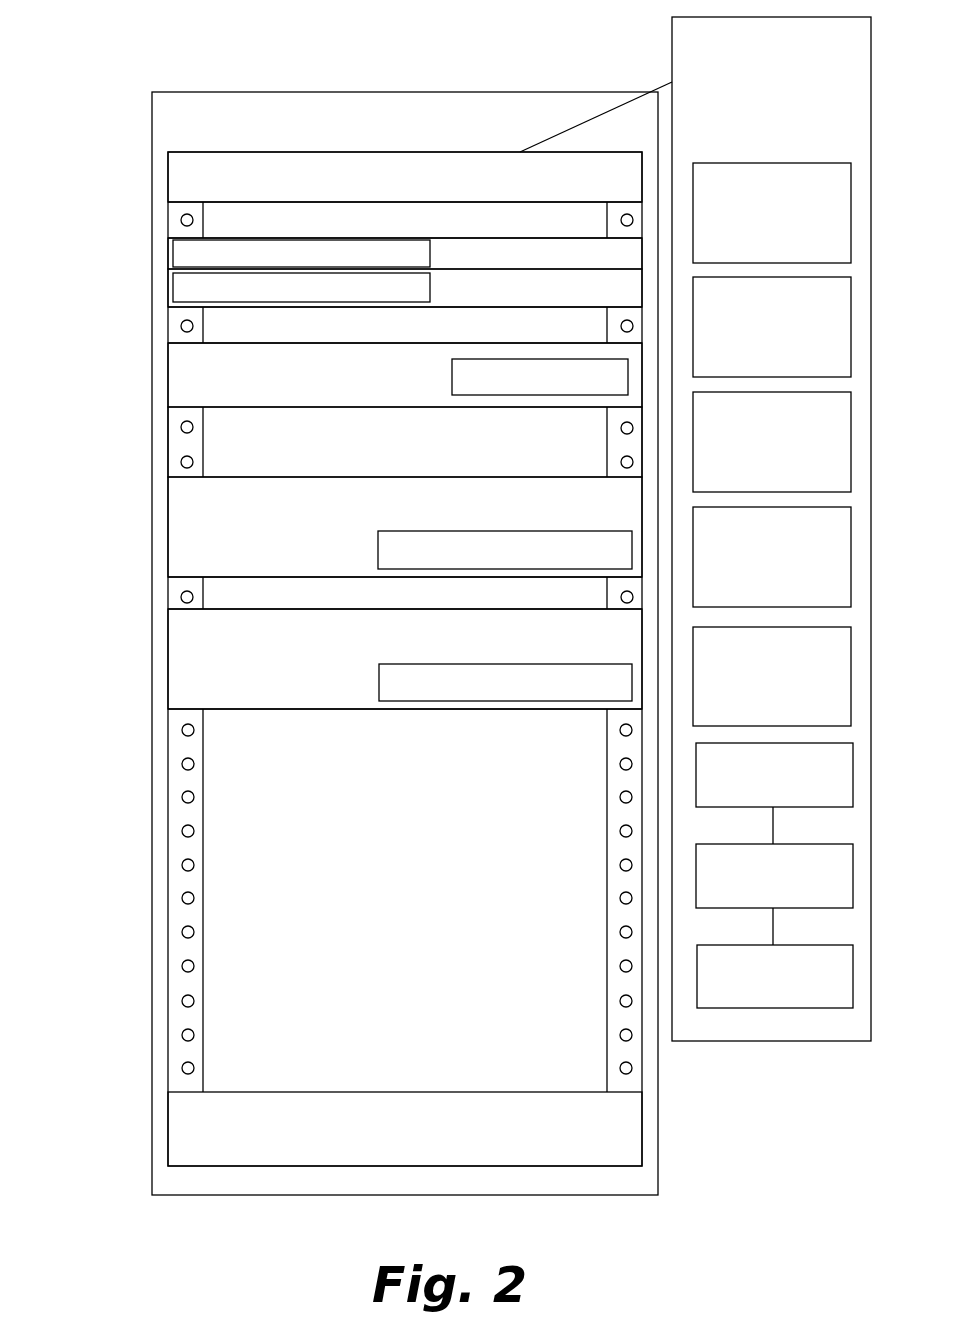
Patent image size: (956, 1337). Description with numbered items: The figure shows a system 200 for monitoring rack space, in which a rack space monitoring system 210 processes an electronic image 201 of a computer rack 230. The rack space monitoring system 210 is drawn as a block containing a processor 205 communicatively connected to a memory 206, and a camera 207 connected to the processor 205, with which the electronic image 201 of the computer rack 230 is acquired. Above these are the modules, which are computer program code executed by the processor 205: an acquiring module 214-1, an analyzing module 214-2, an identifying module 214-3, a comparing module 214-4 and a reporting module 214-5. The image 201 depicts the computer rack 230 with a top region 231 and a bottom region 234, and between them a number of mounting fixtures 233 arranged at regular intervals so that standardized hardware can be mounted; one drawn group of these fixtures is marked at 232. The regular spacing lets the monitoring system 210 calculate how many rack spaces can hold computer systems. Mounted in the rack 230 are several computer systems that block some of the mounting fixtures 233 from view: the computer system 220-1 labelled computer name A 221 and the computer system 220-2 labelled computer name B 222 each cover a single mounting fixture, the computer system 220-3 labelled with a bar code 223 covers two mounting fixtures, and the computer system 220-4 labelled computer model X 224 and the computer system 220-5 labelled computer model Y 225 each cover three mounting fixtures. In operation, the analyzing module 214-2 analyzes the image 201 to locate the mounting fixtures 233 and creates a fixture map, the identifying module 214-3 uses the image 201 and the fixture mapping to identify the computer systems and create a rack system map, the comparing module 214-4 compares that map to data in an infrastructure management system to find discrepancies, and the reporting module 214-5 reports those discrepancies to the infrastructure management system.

The system 200 is at (326, 50).
The image 201 is at (195, 150).
The rack space monitoring system 210 is at (755, 157).
The acquiring module 214-1 is at (744, 250).
The analyzing module 214-2 is at (744, 364).
The identifying module 214-3 is at (744, 479).
The comparing module 214-4 is at (744, 594).
The reporting module 214-5 is at (744, 713).
The memory 206 is at (756, 798).
The processor 205 is at (756, 899).
The camera 207 is at (756, 1000).
The computer system 220-1 is at (329, 256).
The computer system 220-2 is at (329, 288).
The computer system 220-3 is at (346, 375).
The computer system 220-4 is at (341, 527).
The computer system 220-5 is at (338, 659).
The computer name A 221 is at (301, 253).
The computer name B 222 is at (301, 287).
The bar code 223 is at (510, 388).
The computer model X 224 is at (430, 560).
The computer model Y 225 is at (430, 693).
The computer rack 230 is at (168, 167).
The rack top panel 231 is at (223, 181).
The rack mounting rail section 232 is at (220, 445).
The mounting fixtures 233 is at (188, 1036).
The rack bottom panel 234 is at (210, 1135).